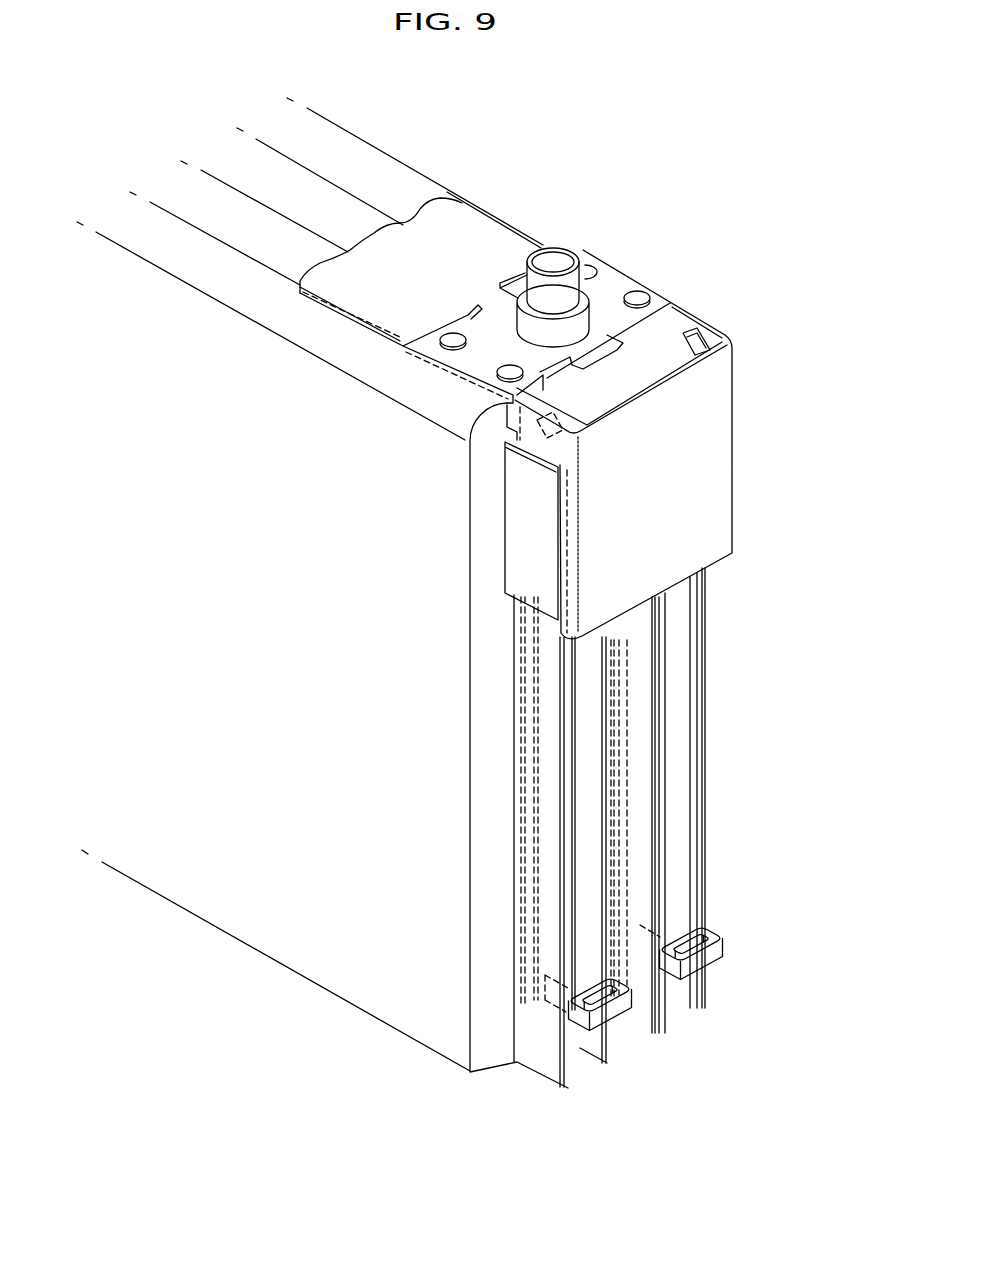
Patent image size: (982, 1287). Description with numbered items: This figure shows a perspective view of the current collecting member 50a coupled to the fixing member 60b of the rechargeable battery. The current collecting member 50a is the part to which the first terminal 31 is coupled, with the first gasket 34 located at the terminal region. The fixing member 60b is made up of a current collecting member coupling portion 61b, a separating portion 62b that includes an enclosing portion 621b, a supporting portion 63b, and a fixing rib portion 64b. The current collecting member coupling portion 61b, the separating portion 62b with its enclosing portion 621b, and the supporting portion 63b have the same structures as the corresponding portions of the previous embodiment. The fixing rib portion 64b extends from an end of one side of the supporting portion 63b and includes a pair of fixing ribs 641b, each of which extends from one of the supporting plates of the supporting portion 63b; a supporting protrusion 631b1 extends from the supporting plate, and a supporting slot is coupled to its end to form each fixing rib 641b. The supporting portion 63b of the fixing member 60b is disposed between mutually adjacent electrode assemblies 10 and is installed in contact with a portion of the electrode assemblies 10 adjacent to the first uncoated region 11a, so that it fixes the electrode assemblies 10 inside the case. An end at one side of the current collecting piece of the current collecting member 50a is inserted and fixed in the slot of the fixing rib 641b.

The electrode assembly 10 is at (241, 945).
The first uncoated region 11a is at (658, 872).
The first terminal 31 is at (553, 264).
The first gasket 34 is at (578, 318).
The current collecting member 50a is at (705, 670).
The fixing member 60b is at (497, 211).
The current collecting member coupling portion 61b is at (435, 230).
The separating portion 62b is at (707, 462).
The enclosing portion 621b is at (535, 560).
The guide slot 631b1 is at (525, 753).
The supporting portion 63b is at (512, 1006).
The fixing rib portion 64b is at (732, 943).
The fixing rib 641b is at (693, 965).